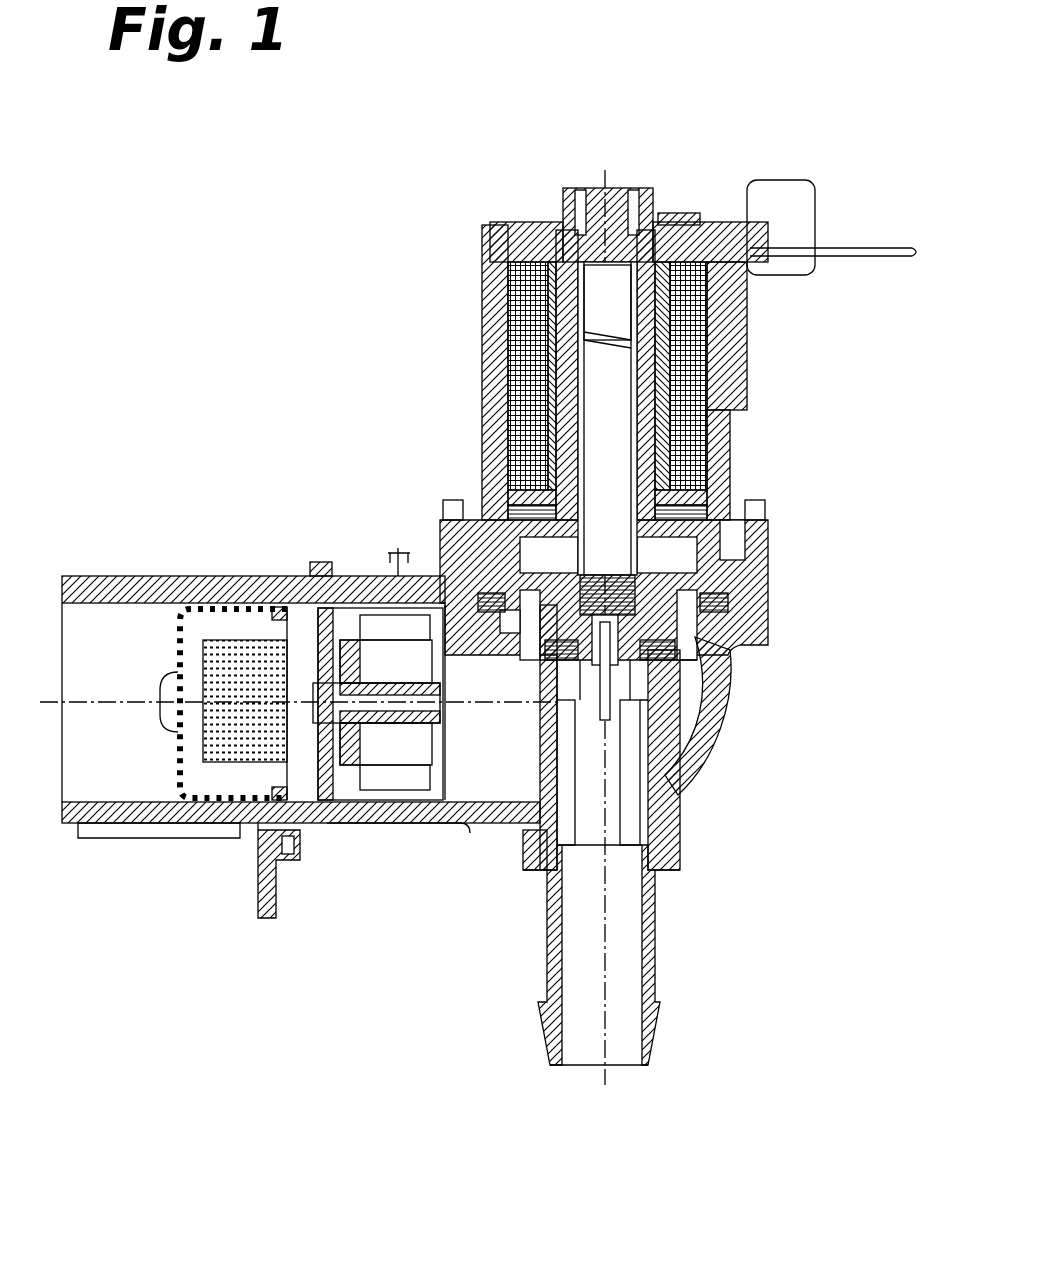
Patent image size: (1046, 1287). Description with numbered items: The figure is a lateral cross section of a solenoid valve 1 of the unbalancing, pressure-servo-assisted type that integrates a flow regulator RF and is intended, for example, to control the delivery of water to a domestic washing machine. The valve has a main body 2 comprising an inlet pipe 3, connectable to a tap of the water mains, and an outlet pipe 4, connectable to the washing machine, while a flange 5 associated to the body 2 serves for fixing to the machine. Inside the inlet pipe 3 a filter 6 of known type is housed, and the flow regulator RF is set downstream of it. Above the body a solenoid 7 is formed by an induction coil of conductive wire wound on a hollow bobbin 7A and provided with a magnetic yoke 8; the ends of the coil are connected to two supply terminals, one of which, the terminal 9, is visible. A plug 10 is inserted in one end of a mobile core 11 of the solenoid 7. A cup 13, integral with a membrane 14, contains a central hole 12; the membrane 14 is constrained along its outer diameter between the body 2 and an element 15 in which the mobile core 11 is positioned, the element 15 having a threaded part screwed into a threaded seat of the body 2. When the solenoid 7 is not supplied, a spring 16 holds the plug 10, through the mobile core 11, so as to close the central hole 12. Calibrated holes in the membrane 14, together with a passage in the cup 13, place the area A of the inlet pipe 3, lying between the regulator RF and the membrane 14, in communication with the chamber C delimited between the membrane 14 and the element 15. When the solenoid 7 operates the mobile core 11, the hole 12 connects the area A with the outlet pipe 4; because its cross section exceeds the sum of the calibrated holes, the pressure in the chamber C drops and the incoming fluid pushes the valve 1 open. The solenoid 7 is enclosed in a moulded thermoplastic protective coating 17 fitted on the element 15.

The solenoid valve 1 is at (298, 306).
The main body 2 is at (274, 550).
The inlet pipe 3 is at (62, 606).
The outlet pipe 4 is at (555, 1055).
The flange 5 is at (262, 920).
The filter 6 is at (174, 780).
The solenoid 7 is at (505, 358).
The hollow bobbin 7A is at (700, 220).
The magnetic yoke 8 is at (537, 238).
The supply terminal 9 is at (840, 252).
The plug 10 is at (770, 626).
The mobile core 11 is at (722, 398).
The central hole 12 is at (628, 730).
The cup 13 is at (622, 717).
The membrane 14 is at (733, 692).
The element 15 is at (618, 187).
The spring 16 is at (505, 232).
The protective coating 17 is at (740, 338).
The area A is at (515, 765).
The chamber C is at (525, 578).
The flow regulator RF is at (456, 778).